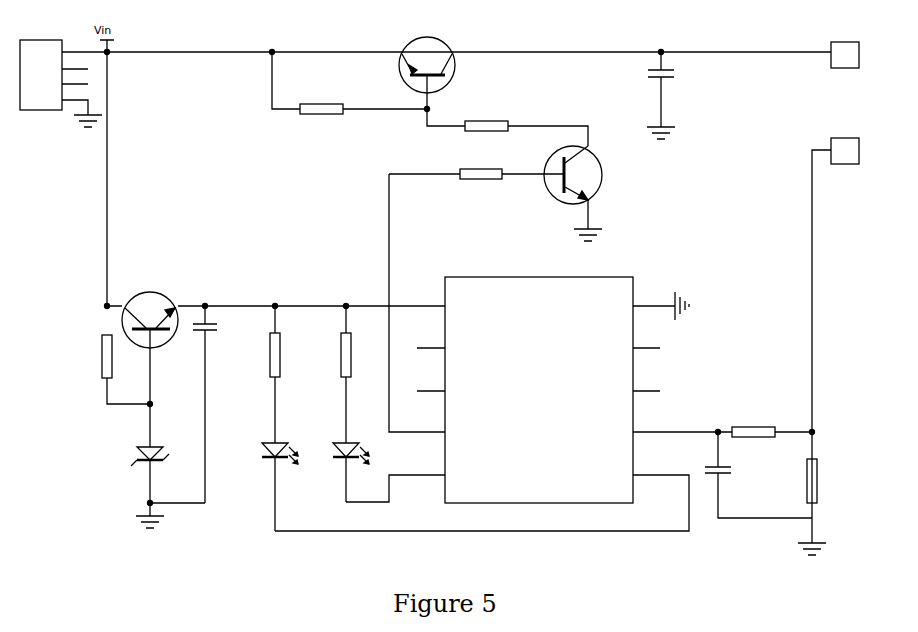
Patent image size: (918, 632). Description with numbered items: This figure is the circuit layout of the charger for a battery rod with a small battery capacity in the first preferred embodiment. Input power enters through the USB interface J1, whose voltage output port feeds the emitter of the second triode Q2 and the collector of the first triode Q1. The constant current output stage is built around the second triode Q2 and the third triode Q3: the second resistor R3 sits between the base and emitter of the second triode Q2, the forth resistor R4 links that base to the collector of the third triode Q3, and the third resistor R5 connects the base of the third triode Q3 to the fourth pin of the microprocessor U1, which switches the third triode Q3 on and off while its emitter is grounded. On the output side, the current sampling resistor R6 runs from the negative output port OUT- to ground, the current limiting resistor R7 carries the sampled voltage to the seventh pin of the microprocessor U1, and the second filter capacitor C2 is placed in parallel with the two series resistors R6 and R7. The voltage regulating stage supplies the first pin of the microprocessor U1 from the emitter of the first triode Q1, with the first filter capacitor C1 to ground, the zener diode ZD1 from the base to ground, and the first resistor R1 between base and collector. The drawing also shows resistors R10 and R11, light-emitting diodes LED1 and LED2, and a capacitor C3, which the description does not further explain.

The USB interface J1 is at (61, 75).
The first triode Q1 is at (150, 358).
The second triode Q2 is at (410, 73).
The third triode Q3 is at (565, 193).
The first resistor R1 is at (117, 369).
The second resistor R3 is at (351, 83).
The forth resistor R4 is at (507, 124).
The third resistor R5 is at (476, 184).
The current sampling resistor R6 is at (824, 481).
The current limiting resistor R7 is at (724, 422).
The resistor R10 is at (290, 374).
The resistor R11 is at (360, 374).
The first filter capacitor C1 is at (214, 404).
The second filter capacitor C2 is at (758, 475).
The capacitor C3 is at (671, 95).
The zener diode ZD1 is at (155, 487).
The light emitting diode LED1 is at (266, 475).
The light emitting diode LED2 is at (339, 460).
The microprocessor U1 is at (553, 382).
The negative output port OUT- is at (828, 338).